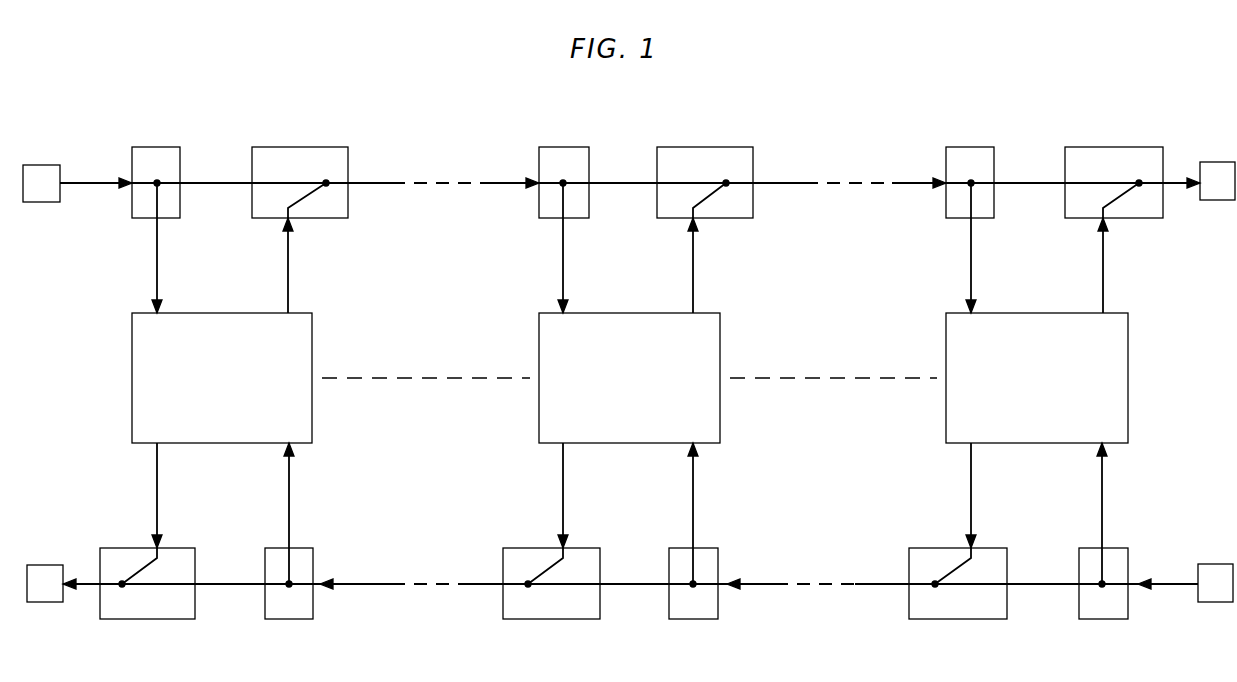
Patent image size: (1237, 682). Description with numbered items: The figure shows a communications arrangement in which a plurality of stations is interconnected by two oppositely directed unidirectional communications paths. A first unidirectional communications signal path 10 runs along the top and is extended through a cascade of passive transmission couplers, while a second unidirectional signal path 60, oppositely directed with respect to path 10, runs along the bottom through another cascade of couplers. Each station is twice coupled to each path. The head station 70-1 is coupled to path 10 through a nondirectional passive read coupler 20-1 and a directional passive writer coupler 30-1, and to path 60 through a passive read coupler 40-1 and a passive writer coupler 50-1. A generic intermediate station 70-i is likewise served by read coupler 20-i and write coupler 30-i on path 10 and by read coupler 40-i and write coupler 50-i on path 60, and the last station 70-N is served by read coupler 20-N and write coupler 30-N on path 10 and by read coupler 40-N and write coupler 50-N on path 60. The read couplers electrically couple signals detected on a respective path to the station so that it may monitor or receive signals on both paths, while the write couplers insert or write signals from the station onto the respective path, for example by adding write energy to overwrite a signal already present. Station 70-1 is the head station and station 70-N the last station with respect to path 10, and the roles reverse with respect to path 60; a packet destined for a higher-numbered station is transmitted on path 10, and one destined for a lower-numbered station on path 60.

The first unidirectional communications signal path 10 is at (93, 186).
The second unidirectional signal path 60 is at (86, 588).
The passive read coupler 20-1 is at (160, 147).
The passive writer coupler 30-1 is at (278, 147).
The head station 70-1 is at (198, 313).
The passive writer coupler 50-1 is at (122, 620).
The passive read coupler 40-1 is at (273, 620).
The passive read coupler 20-i is at (561, 147).
The passive writer coupler 30-i is at (684, 147).
The station 70-i is at (596, 313).
The passive writer coupler 50-i is at (530, 620).
The passive read coupler 40-i is at (681, 620).
The passive read coupler 20-N is at (960, 147).
The passive writer coupler 30-N is at (1086, 147).
The last station 70-N is at (1006, 313).
The passive writer coupler 50-N is at (932, 620).
The passive read coupler 40-N is at (1092, 620).